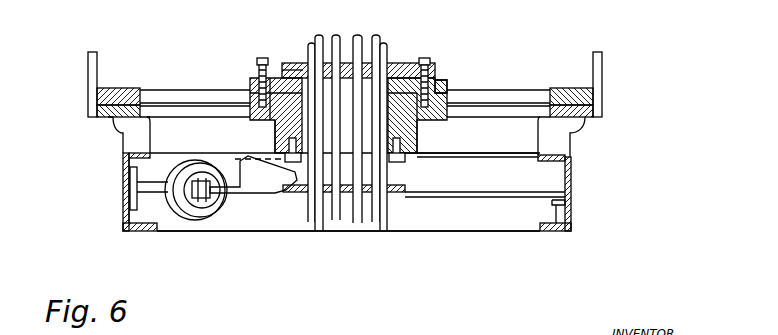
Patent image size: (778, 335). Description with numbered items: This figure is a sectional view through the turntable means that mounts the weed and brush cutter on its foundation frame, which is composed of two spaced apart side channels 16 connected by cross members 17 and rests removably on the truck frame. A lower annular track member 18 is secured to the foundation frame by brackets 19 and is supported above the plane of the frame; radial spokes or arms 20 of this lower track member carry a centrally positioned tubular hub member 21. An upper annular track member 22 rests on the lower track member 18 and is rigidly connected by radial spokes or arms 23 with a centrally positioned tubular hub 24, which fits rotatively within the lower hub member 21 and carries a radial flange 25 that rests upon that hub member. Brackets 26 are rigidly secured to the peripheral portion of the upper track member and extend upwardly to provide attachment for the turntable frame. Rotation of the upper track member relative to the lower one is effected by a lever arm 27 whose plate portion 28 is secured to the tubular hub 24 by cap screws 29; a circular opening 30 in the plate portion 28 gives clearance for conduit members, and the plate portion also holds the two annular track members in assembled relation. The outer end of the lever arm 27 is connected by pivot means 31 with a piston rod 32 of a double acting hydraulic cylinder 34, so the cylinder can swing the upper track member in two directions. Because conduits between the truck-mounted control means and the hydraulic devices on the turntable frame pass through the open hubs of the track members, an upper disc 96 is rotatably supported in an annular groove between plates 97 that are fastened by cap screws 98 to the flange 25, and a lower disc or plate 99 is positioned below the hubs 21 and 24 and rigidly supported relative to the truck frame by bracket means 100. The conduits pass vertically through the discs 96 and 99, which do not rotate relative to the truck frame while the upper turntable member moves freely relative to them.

The side channels 16 is at (123, 212).
The cross members 17 is at (527, 224).
The lower annular track member 18 is at (100, 111).
The brackets 19 is at (133, 137).
The radial spokes or arms 20 is at (193, 118).
The tubular hub member 21 is at (440, 152).
The upper annular track member 22 is at (108, 96).
The radial spokes or arms 23 is at (157, 92).
The tubular hub 24 is at (276, 135).
The radial flange 25 is at (250, 96).
The brackets 26 is at (88, 71).
The lever arm 27 is at (254, 196).
The plate portion 28 is at (263, 156).
The cap screws 29 is at (296, 192).
The circular opening 30 is at (345, 198).
The pivot means 31 is at (206, 200).
The piston rod 32 is at (197, 206).
The hydraulic cylinder 34 is at (174, 196).
The upper disc 96 is at (390, 70).
The plates 97 is at (437, 80).
The cap screws 98 is at (262, 58).
The lower disc or plate 99 is at (330, 205).
The bracket means 100 is at (507, 196).